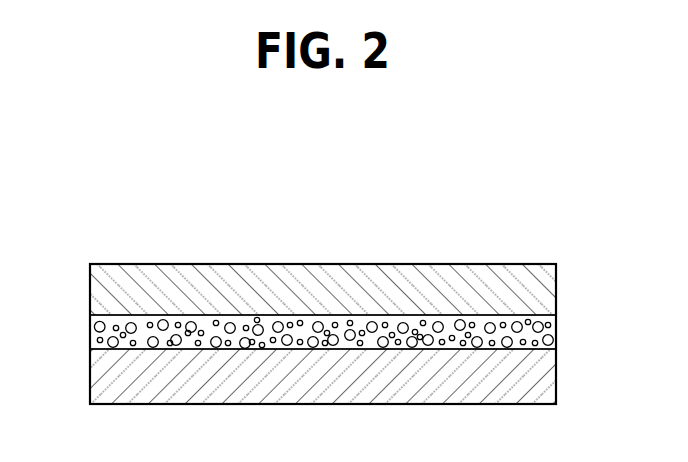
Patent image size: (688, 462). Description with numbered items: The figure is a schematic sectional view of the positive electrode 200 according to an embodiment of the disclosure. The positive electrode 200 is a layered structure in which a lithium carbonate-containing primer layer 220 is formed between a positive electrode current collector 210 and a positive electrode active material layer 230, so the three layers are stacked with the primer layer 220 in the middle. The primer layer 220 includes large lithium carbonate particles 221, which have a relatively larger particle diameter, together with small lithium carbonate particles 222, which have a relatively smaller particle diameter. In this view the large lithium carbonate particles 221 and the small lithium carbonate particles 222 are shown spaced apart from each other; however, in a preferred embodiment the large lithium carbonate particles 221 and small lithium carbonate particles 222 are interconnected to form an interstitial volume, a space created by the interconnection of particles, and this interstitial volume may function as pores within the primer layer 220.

The positive electrode 200 is at (203, 210).
The positive electrode current collector 210 is at (557, 379).
The lithium carbonate-containing primer layer 220 is at (320, 329).
The large lithium carbonate particles 221 is at (94, 326).
The small lithium carbonate particles 222 is at (97, 341).
The positive electrode active material layer 230 is at (557, 290).